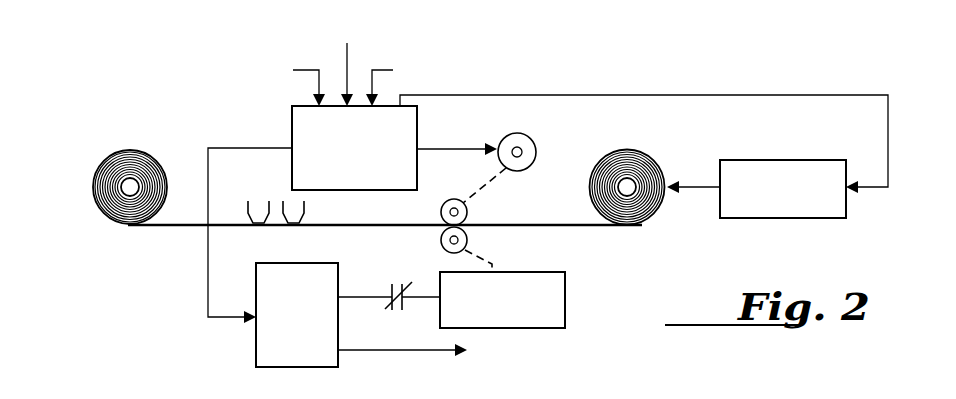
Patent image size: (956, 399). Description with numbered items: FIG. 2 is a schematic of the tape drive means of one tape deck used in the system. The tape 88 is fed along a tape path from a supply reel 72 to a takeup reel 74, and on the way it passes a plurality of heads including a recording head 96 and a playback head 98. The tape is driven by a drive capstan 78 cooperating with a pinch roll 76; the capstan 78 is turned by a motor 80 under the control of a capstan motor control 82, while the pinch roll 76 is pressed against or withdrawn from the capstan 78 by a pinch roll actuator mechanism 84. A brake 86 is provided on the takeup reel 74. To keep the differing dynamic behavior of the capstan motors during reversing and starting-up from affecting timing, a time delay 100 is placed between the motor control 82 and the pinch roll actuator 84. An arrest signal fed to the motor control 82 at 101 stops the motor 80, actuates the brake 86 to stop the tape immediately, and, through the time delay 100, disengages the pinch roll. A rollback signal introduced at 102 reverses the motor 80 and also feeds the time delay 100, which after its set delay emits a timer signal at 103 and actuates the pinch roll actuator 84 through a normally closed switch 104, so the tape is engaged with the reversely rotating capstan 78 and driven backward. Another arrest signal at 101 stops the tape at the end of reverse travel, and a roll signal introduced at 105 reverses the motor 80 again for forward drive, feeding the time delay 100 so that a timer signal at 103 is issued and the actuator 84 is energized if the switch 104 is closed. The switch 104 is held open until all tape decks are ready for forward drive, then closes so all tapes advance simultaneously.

The supply reel 72 is at (173, 134).
The takeup reel 74 is at (680, 134).
The pinch roll 76 is at (468, 238).
The drive capstan 78 is at (463, 209).
The motor 80 is at (512, 137).
The capstan motor control 82 is at (417, 126).
The pinch roll actuator mechanism 84 is at (560, 287).
The brake 86 is at (773, 219).
The tape 88 is at (188, 228).
The recording head 96 is at (260, 208).
The playback head 98 is at (297, 210).
The time delay 100 is at (256, 334).
The arrest signal 101 is at (387, 70).
The rollback signal 102 is at (347, 58).
The timer signal 103 is at (391, 350).
The normally closed switch 104 is at (393, 289).
The roll signal 105 is at (318, 80).